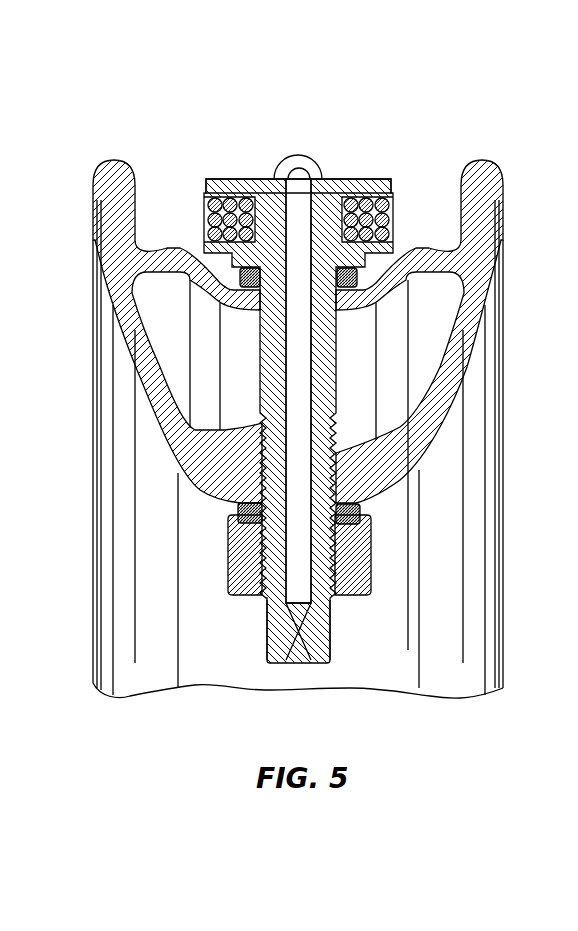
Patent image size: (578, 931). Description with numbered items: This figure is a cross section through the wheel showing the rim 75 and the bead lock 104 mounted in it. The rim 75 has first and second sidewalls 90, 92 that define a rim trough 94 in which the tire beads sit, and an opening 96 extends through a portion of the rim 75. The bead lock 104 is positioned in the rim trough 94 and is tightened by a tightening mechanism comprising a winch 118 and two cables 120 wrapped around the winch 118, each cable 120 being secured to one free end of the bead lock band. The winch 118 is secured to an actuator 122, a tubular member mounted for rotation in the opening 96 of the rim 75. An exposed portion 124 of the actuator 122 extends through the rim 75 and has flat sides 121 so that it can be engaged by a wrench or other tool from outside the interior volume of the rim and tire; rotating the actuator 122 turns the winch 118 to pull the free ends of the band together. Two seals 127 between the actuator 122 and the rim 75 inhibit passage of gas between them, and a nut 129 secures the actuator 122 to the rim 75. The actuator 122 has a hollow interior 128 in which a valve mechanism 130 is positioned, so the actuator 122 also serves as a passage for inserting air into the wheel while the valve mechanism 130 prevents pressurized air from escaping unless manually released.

The rim 75 is at (468, 350).
The first sidewall 90 is at (503, 182).
The second sidewall 92 is at (100, 168).
The rim trough 94 is at (163, 157).
The opening 96 is at (338, 288).
The bead lock 104 is at (381, 160).
The winch 118 is at (334, 178).
The cables 120 is at (396, 203).
The flat sides 121 is at (268, 621).
The actuator 122 is at (268, 424).
The exposed portion 124 is at (262, 584).
The seals 127 is at (238, 302).
The hollow interior 128 is at (302, 392).
The nut 129 is at (366, 558).
The valve mechanism 130 is at (300, 664).